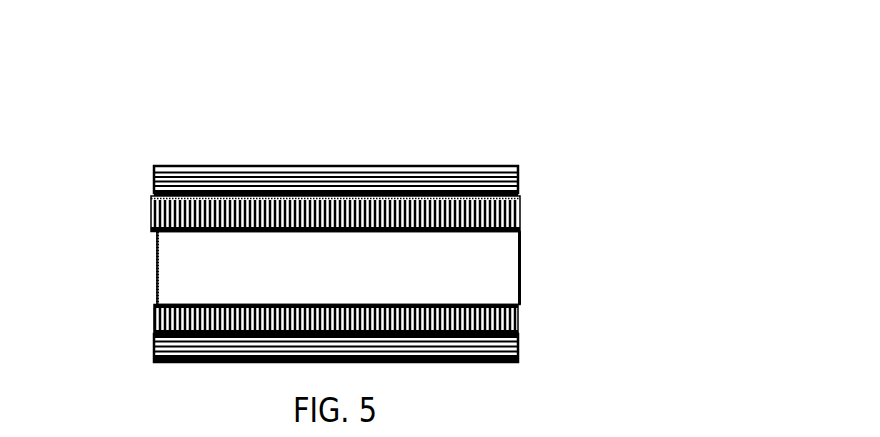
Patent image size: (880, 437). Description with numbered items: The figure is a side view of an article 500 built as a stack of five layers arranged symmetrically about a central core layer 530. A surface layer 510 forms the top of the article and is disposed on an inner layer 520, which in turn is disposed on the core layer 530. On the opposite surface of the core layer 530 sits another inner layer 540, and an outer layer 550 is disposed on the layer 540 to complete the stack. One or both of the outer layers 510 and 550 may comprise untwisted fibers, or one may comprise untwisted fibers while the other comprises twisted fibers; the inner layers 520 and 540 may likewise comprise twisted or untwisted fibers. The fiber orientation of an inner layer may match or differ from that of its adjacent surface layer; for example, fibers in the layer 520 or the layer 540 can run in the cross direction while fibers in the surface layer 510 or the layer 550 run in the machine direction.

The article 500 is at (203, 92).
The surface layer 510 is at (520, 168).
The layer 520 is at (520, 215).
The core layer 530 is at (503, 273).
The layer 540 is at (520, 323).
The layer 550 is at (520, 355).